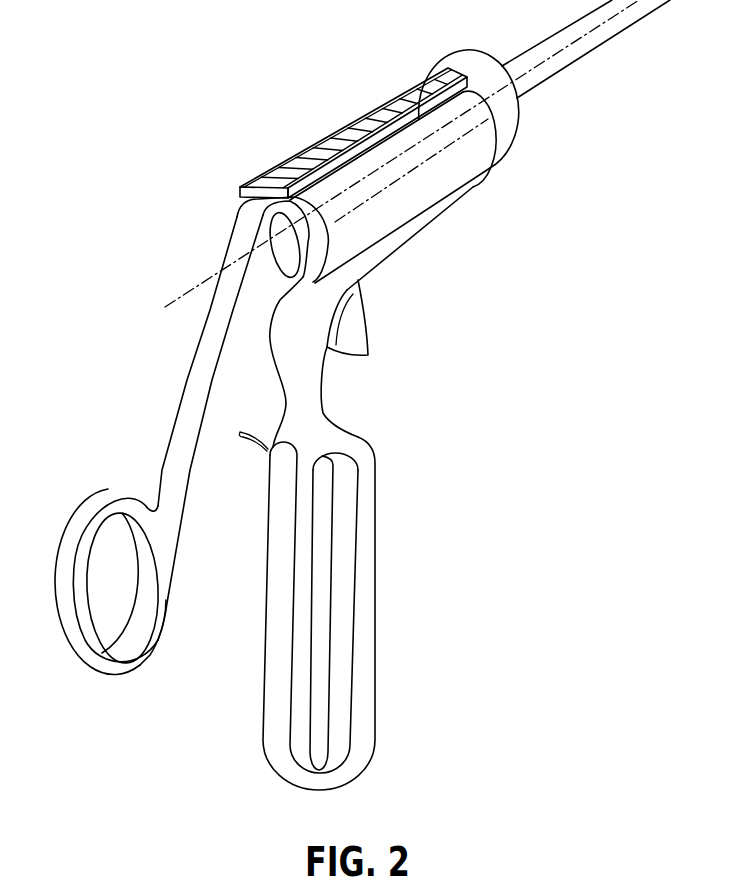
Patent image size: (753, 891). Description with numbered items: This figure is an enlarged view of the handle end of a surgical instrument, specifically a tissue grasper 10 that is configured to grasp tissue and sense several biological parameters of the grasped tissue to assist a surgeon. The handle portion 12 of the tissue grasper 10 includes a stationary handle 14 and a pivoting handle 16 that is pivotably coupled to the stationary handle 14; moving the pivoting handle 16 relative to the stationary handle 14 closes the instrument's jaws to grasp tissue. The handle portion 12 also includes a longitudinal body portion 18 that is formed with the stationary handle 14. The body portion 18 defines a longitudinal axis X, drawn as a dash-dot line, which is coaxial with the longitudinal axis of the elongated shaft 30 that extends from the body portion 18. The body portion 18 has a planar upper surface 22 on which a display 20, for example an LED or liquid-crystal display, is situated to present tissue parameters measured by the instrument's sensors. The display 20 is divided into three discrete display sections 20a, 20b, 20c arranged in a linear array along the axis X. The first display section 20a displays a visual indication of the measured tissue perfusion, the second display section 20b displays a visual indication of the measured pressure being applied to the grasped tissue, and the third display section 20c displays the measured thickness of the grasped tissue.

The tissue grasper 10 is at (145, 109).
The handle portion 12 is at (170, 368).
The stationary handle 14 is at (375, 548).
The pivoting handle 16 is at (170, 457).
The body portion 18 is at (465, 160).
The display 20 is at (312, 99).
The first display section 20a is at (300, 167).
The second display section 20b is at (353, 128).
The third display section 20c is at (418, 78).
The planar upper surface 22 is at (240, 193).
The elongated shaft 30 is at (573, 58).